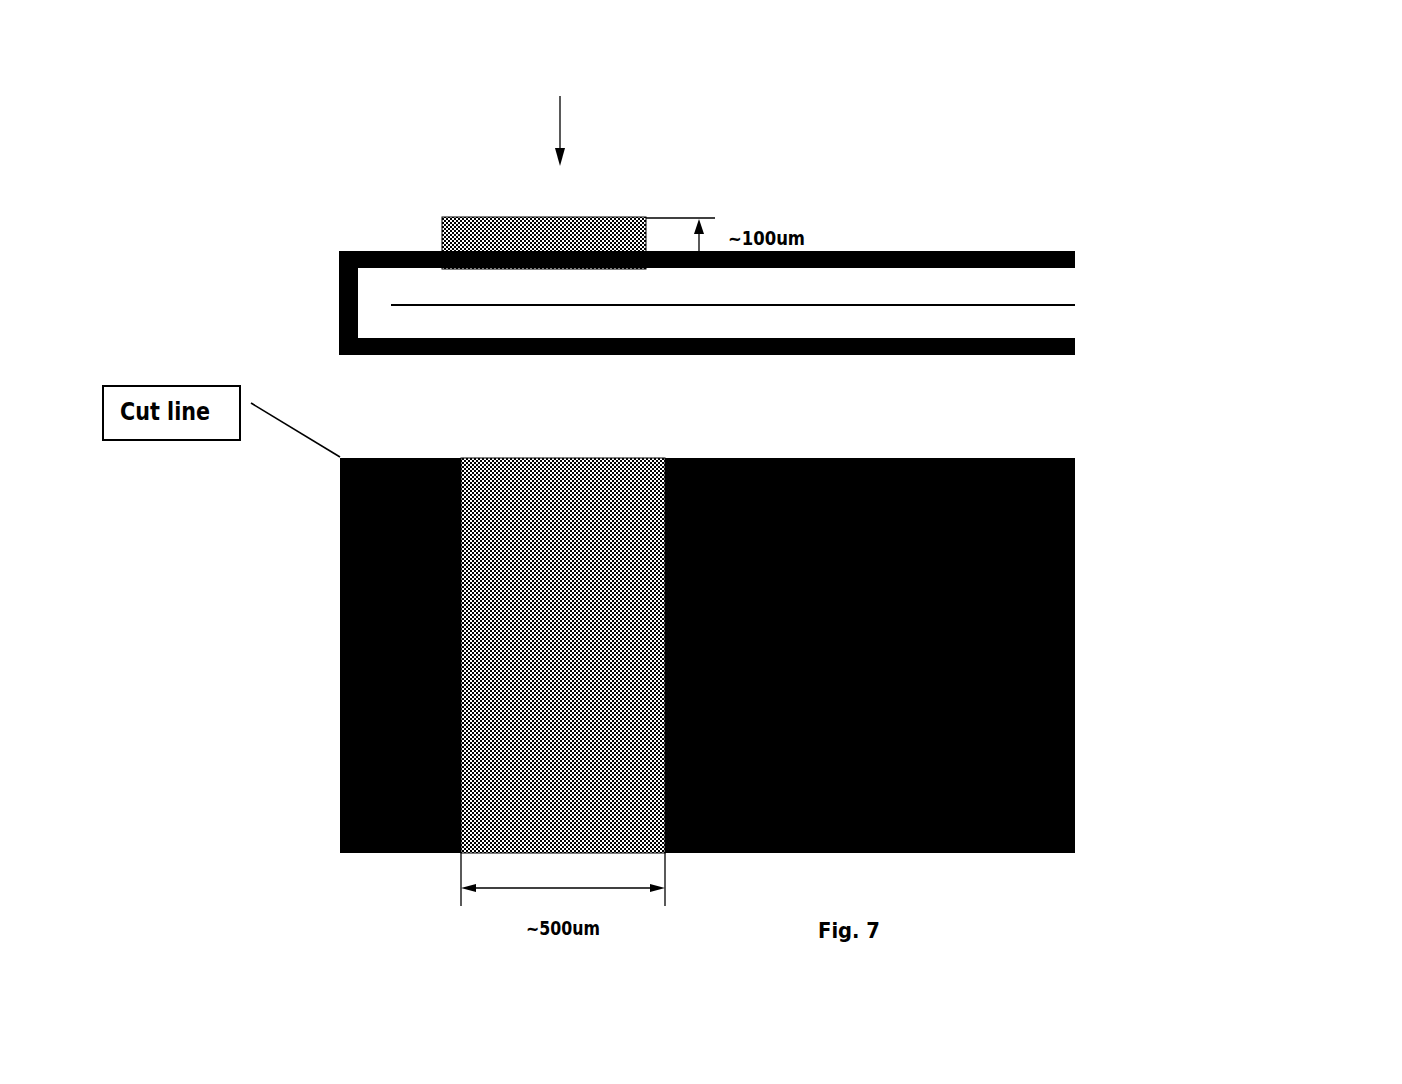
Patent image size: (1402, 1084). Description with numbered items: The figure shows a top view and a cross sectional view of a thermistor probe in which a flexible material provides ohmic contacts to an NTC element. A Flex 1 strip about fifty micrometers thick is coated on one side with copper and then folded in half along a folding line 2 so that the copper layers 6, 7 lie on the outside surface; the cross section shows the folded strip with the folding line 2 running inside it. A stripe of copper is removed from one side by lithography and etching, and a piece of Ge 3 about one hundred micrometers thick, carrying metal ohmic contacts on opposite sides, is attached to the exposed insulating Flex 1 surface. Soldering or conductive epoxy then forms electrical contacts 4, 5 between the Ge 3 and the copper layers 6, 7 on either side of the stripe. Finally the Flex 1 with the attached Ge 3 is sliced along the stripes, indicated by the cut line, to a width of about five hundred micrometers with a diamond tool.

The Flex 1 is at (900, 275).
The folding line 2 is at (967, 297).
The Ge 3 is at (477, 227).
The electrical contact 4 is at (1066, 763).
The electrical contact 5 is at (332, 627).
The copper layer 6 is at (1067, 555).
The copper layer 7 is at (332, 795).